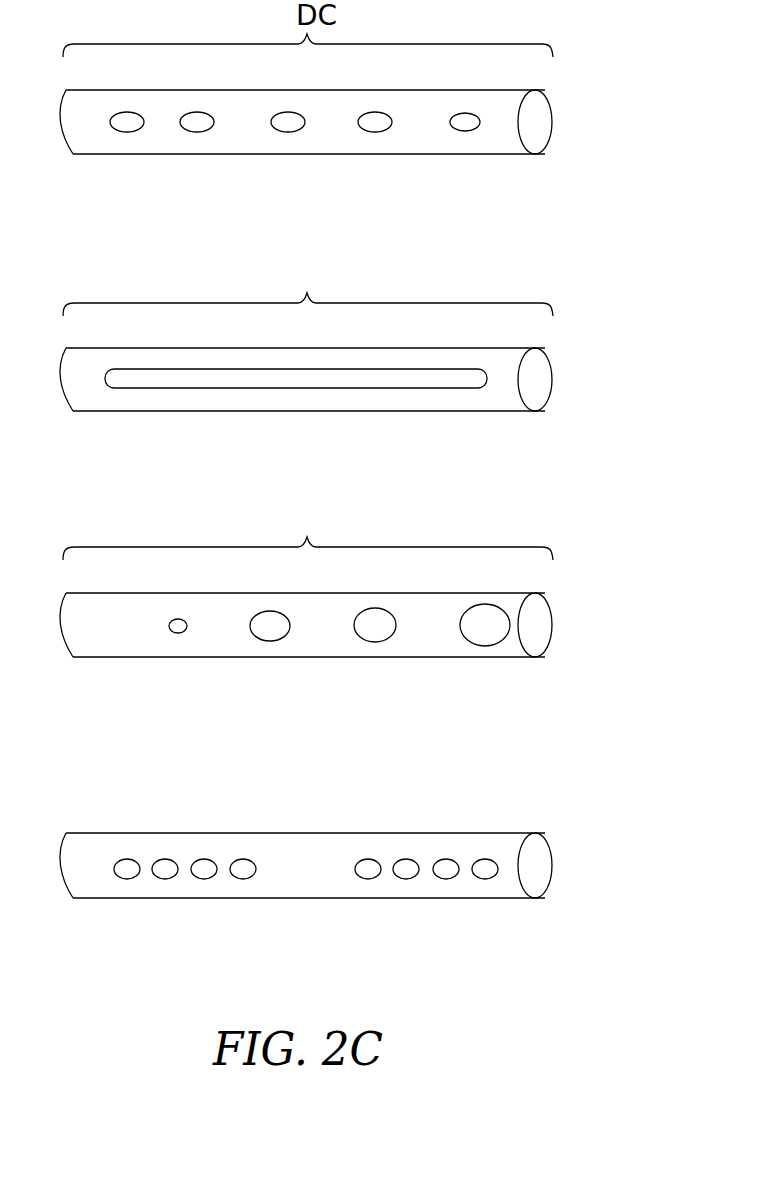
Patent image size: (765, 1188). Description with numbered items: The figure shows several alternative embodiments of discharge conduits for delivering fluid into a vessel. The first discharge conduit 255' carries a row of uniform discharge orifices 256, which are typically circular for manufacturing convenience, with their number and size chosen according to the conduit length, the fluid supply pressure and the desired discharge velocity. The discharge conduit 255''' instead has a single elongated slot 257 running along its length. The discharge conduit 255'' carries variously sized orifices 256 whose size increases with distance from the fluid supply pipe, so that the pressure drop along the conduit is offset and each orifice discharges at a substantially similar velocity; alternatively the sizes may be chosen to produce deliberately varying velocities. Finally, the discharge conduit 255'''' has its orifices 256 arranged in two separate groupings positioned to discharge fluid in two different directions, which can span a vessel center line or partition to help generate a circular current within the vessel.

The discharge conduit 255' is at (342, 122).
The discharge conduit 255''' is at (347, 379).
The discharge conduit 255'' is at (344, 625).
The discharge conduit 255'''' is at (348, 865).
The discharge orifices 256 is at (376, 132).
The slot 257 is at (378, 388).